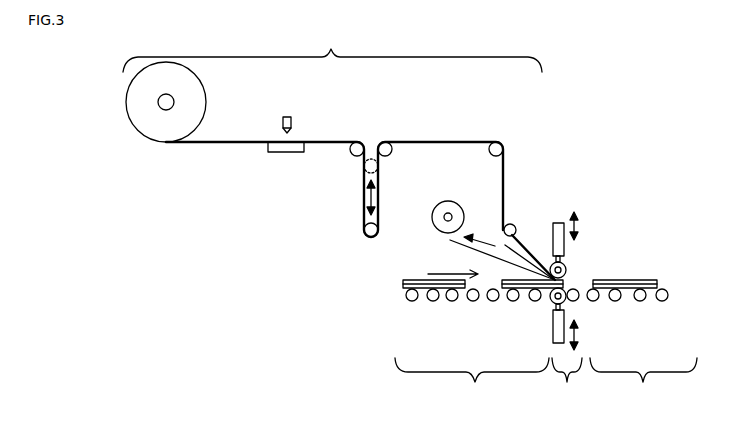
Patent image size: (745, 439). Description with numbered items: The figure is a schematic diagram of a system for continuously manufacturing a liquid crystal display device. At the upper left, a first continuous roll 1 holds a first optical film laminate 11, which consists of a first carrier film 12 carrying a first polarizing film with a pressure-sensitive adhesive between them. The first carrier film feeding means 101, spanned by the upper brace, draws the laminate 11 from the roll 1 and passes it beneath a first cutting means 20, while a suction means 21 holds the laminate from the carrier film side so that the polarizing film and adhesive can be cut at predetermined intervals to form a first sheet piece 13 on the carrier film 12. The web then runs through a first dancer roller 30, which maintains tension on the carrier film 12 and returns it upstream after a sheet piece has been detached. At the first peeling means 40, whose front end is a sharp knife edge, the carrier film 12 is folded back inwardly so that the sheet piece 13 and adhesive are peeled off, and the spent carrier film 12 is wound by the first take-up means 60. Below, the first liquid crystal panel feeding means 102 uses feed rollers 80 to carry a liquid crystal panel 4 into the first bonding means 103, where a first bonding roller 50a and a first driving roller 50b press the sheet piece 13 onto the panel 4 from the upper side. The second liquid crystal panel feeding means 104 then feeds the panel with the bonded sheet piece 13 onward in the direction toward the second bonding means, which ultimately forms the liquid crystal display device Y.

The first continuous roll 1 is at (140, 125).
The first optical film laminate 11 is at (218, 141).
The first cutting means 20 is at (289, 115).
The suction means 21 is at (278, 152).
The first dancer roller 30 is at (356, 216).
The first take-up means 60 is at (448, 217).
The first carrier film 12 is at (452, 241).
The first peeling means 40 is at (522, 256).
The liquid crystal panel 4 is at (403, 281).
The first sheet piece 13 is at (633, 280).
The first bonding roller 50a is at (566, 270).
The first driving roller 50b is at (552, 300).
The feed roller 80 is at (411, 308).
The liquid crystal display device Y is at (662, 266).
The first carrier film feeding means 101 is at (332, 50).
The first liquid crystal panel feeding means 102 is at (472, 384).
The first bonding means 103 is at (567, 384).
The second liquid crystal panel feeding means 104 is at (643, 384).